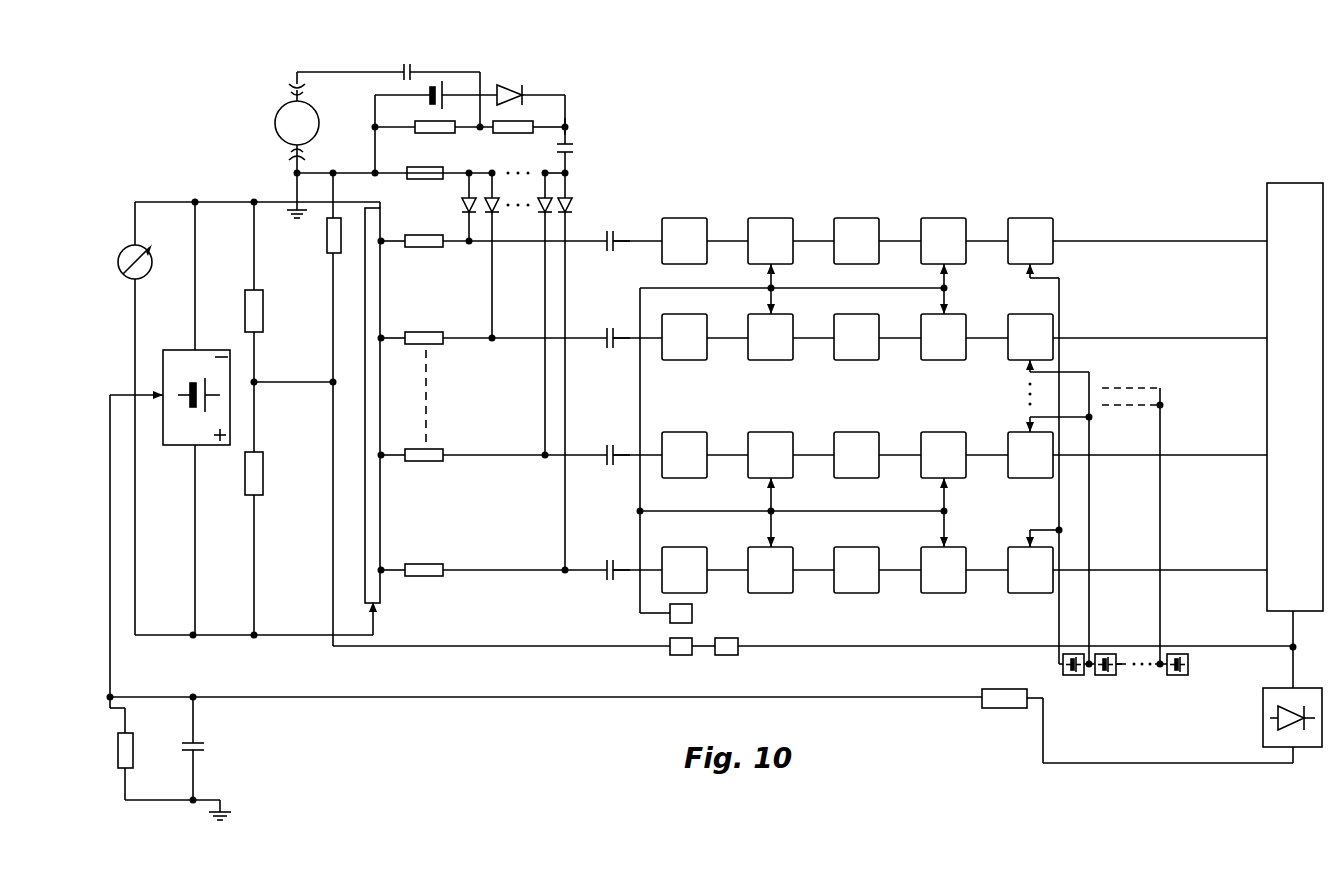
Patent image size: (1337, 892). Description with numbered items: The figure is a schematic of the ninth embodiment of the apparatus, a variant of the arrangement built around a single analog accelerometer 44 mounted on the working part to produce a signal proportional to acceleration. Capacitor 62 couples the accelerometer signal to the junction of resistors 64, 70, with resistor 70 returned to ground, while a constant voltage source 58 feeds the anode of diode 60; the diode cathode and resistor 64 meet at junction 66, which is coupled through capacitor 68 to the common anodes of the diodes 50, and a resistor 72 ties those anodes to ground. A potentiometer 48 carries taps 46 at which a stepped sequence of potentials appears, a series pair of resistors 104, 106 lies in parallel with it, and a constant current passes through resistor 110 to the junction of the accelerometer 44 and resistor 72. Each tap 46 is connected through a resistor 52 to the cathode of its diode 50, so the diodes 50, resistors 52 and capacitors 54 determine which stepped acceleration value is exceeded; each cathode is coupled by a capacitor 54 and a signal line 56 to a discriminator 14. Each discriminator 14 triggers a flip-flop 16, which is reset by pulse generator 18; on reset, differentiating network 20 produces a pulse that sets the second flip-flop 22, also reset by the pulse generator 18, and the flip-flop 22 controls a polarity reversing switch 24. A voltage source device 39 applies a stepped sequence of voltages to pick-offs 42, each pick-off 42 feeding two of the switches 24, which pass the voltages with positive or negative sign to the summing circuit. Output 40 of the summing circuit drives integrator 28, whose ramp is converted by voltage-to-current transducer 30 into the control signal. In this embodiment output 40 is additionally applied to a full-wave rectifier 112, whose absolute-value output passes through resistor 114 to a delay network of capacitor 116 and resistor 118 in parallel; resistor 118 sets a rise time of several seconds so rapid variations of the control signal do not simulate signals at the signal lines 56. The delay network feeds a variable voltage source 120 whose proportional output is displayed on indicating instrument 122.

The discriminator 14 is at (697, 227).
The flip-flop 16 is at (783, 227).
The pulse generator 18 is at (694, 617).
The differentiating network 20 is at (869, 225).
The second flip-flop 22 is at (956, 227).
The polarity reversing switch 24 is at (1043, 227).
The integrator 28 is at (730, 644).
The voltage-to-current transducer 30 is at (686, 646).
The voltage source device 39 is at (1120, 675).
The output of summing circuit 40 is at (1291, 630).
The pick-offs 42 is at (1054, 603).
The analog accelerometer 44 is at (320, 142).
The taps 46 is at (382, 243).
The potentiometer 48 is at (366, 417).
The diodes 50 is at (461, 203).
The resistor 52 is at (411, 235).
The capacitor 54 is at (616, 231).
The signal line 56 is at (614, 243).
The constant voltage source 58 is at (440, 93).
The diode 60 is at (518, 72).
The capacitor 62 is at (400, 85).
The resistor 64 is at (508, 125).
The junction 66 is at (566, 126).
The capacitor 68 is at (566, 150).
The resistor 70 is at (429, 125).
The resistor 72 is at (416, 168).
The resistor 104 is at (248, 282).
The resistor 106 is at (248, 481).
The resistor 110 is at (326, 239).
The full-wave rectifier 112 is at (1262, 713).
The resistor 114 is at (1004, 686).
The capacitor 116 is at (200, 746).
The resistor 118 is at (134, 752).
The variable voltage source 120 is at (214, 354).
The indicating instrument 122 is at (151, 256).